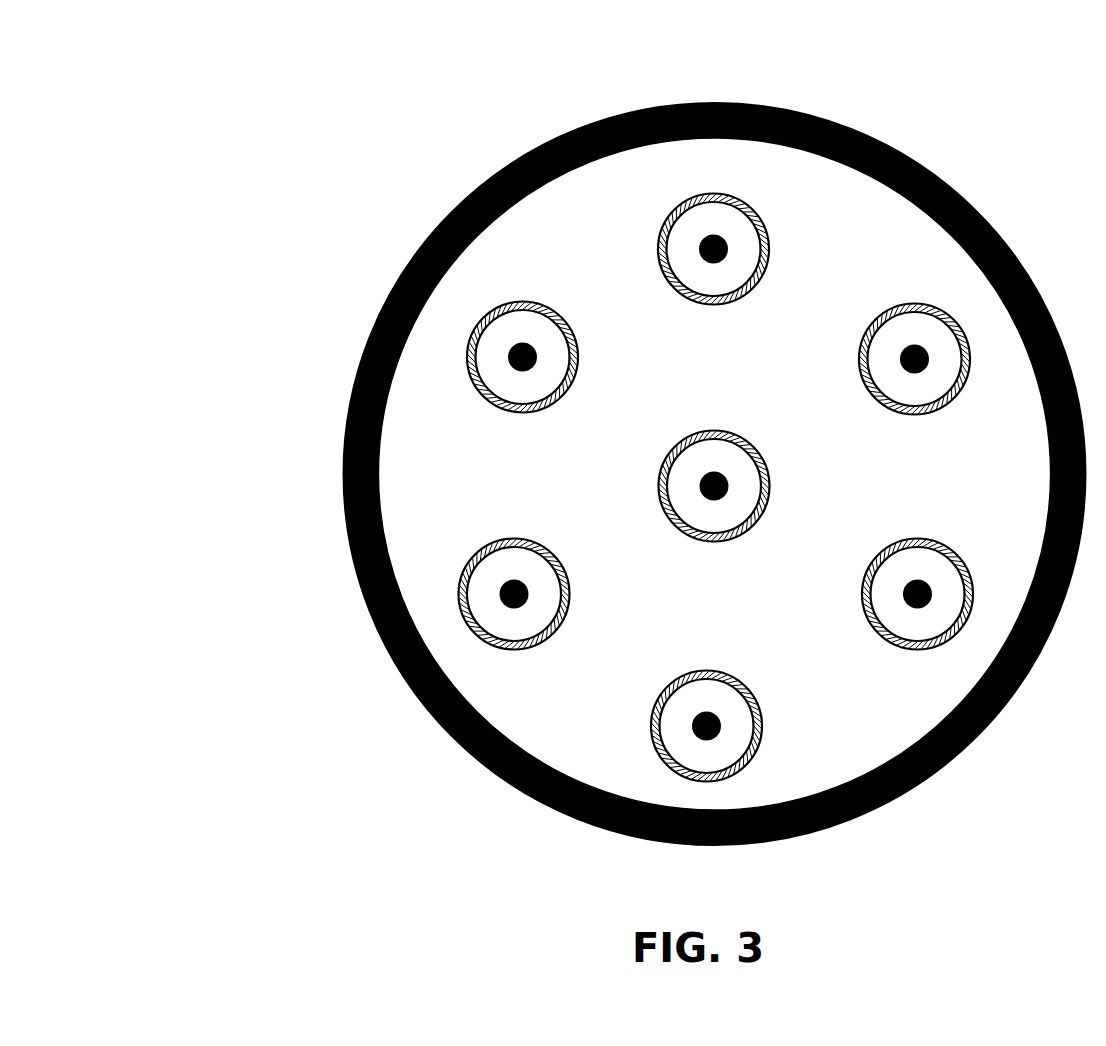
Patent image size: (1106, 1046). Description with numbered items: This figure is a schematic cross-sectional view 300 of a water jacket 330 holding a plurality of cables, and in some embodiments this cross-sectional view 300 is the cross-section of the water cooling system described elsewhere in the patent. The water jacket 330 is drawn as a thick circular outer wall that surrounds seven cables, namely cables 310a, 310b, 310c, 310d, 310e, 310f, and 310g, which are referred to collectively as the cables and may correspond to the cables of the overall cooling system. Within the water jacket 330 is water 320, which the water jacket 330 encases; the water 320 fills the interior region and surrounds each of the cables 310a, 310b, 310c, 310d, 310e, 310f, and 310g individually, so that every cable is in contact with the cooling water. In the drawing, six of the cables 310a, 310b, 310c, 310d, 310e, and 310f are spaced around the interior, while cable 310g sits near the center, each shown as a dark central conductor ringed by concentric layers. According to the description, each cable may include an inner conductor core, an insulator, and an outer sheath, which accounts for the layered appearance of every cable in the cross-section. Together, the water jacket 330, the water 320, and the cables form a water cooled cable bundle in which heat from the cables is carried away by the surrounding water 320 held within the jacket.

The cross-sectional view 300 is at (180, 117).
The water jacket 330 is at (973, 203).
The water 320 is at (715, 474).
The cable 310a is at (532, 288).
The cable 310b is at (774, 267).
The cable 310c is at (895, 292).
The cable 310d is at (957, 532).
The cable 310e is at (707, 659).
The cable 310f is at (514, 529).
The cable 310g is at (701, 421).